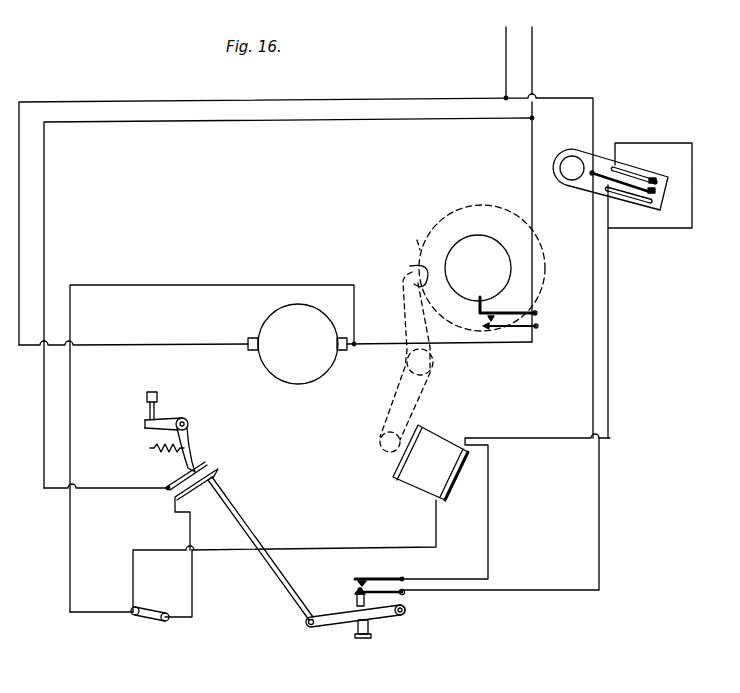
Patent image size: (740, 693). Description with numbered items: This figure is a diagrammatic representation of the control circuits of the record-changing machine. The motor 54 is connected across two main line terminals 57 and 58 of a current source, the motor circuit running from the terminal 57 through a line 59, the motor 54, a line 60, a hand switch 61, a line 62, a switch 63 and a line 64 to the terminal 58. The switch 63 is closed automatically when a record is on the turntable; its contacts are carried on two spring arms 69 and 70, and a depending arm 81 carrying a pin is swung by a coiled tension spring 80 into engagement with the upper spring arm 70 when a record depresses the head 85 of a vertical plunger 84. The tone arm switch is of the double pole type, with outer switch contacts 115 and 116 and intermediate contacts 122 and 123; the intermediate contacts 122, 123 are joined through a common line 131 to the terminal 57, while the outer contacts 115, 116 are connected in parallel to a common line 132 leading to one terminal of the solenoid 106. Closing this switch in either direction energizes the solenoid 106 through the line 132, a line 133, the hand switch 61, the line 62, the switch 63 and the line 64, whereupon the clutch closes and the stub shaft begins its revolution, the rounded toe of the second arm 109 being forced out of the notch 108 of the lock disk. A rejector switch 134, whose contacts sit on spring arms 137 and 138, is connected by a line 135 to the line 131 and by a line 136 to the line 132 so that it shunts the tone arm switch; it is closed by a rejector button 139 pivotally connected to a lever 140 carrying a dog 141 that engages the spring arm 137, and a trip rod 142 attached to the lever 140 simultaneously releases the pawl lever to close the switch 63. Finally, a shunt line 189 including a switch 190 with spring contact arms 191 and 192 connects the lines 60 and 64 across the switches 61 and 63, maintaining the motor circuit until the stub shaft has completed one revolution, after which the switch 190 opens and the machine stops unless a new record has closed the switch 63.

The motor 54 is at (270, 312).
The main line terminal 57 is at (505, 50).
The main line terminal 58 is at (533, 56).
The line 59 is at (180, 345).
The line 60 is at (222, 285).
The hand switch 61 is at (145, 620).
The line 62 is at (193, 586).
The switch 63 is at (212, 470).
The line 64 is at (375, 124).
The spring arm 69 is at (193, 492).
The spring arm 70 is at (170, 480).
The coiled tension spring 80 is at (160, 447).
The depending arm 81 is at (190, 437).
The vertical plunger 84 is at (157, 406).
The head 85 is at (157, 392).
The solenoid 106 is at (432, 440).
The notch 108 is at (412, 266).
The second arm 109 is at (408, 316).
The switch contact 115 is at (648, 206).
The switch contact 116 is at (656, 180).
The contact 122 is at (652, 197).
The contact 123 is at (657, 181).
The common line 131 is at (596, 110).
The common line 132 is at (609, 384).
The line 133 is at (384, 547).
The switch 134 is at (358, 584).
The line 135 is at (531, 590).
The line 136 is at (489, 525).
The spring arm 137 is at (410, 596).
The spring arm 138 is at (393, 574).
The rejector button 139 is at (360, 638).
The lever 140 is at (323, 627).
The dog 141 is at (356, 598).
The trip rod 142 is at (290, 589).
The shunt line 189 is at (538, 250).
The switch 190 is at (483, 326).
The spring contact arm 191 is at (539, 325).
The spring contact arm 192 is at (512, 313).